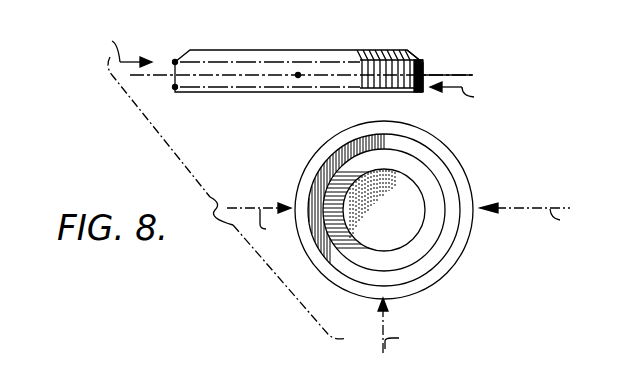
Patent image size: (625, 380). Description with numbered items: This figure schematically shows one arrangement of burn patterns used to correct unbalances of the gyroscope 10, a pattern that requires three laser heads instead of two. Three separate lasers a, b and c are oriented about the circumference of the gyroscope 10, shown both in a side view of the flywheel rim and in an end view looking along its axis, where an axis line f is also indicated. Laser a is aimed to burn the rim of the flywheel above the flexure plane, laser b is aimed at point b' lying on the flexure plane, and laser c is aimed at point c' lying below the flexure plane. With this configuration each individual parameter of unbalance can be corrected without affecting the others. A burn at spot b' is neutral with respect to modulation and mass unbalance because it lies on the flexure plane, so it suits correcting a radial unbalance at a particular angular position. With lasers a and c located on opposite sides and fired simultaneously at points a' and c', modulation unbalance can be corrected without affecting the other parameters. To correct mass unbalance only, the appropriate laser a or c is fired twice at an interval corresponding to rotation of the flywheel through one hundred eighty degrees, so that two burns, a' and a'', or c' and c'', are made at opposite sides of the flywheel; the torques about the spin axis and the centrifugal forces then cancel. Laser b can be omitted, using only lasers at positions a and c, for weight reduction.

The gyroscope 10 is at (351, 289).
The laser a is at (195, 135).
The burn point a' is at (161, 48).
The burn point a'' is at (435, 51).
The laser b is at (395, 325).
The burn point b' is at (316, 52).
The laser c is at (501, 157).
The burn point c' is at (436, 88).
The burn point c'' is at (186, 102).
The axis line f is at (453, 75).